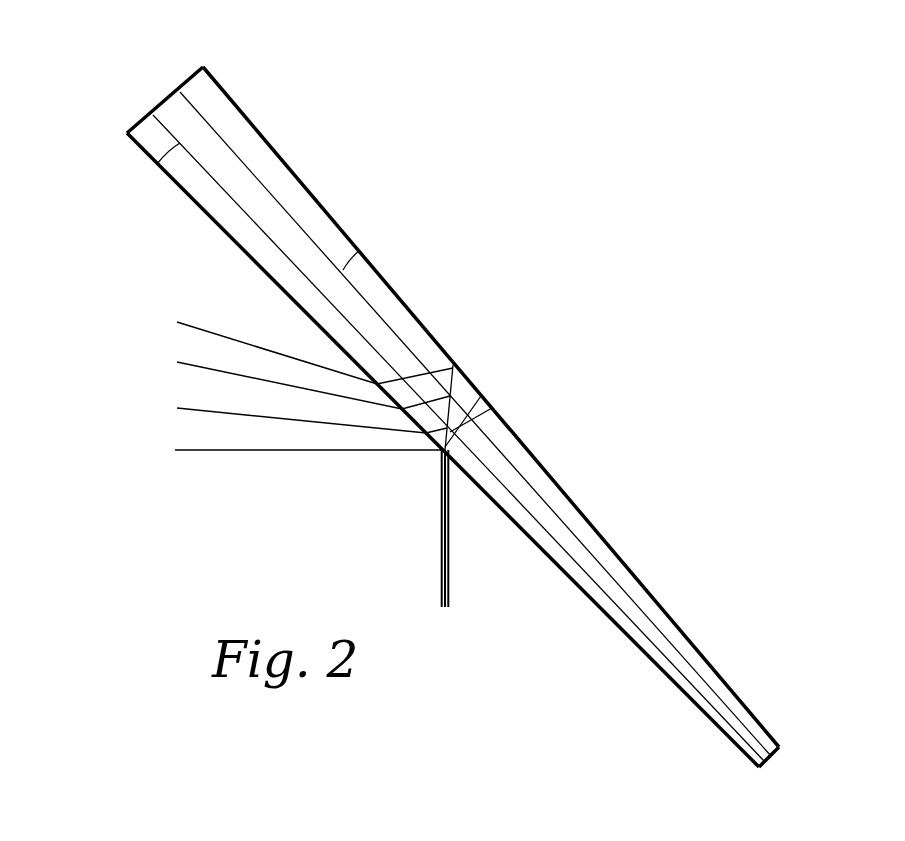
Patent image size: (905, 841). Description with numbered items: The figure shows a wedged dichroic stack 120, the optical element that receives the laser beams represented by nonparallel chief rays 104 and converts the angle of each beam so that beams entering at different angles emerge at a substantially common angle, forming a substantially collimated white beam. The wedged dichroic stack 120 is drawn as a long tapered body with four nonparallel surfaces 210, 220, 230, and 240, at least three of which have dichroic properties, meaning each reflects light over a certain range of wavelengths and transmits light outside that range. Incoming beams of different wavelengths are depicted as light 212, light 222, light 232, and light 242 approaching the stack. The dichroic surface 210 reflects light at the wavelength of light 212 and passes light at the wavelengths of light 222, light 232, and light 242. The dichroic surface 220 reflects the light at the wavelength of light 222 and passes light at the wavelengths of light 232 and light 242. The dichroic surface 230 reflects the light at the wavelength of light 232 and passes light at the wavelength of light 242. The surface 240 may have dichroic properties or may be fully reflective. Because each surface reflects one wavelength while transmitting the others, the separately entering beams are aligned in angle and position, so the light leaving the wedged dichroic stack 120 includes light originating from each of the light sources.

The nonparallel chief rays 104 is at (283, 464).
The wedged dichroic stack 120 is at (432, 417).
The dichroic surface 210 is at (207, 216).
The light 212 is at (202, 452).
The dichroic surface 220 is at (161, 164).
The light 222 is at (190, 409).
The dichroic surface 230 is at (344, 268).
The light 232 is at (193, 365).
The surface 240 is at (310, 192).
The light 242 is at (212, 333).